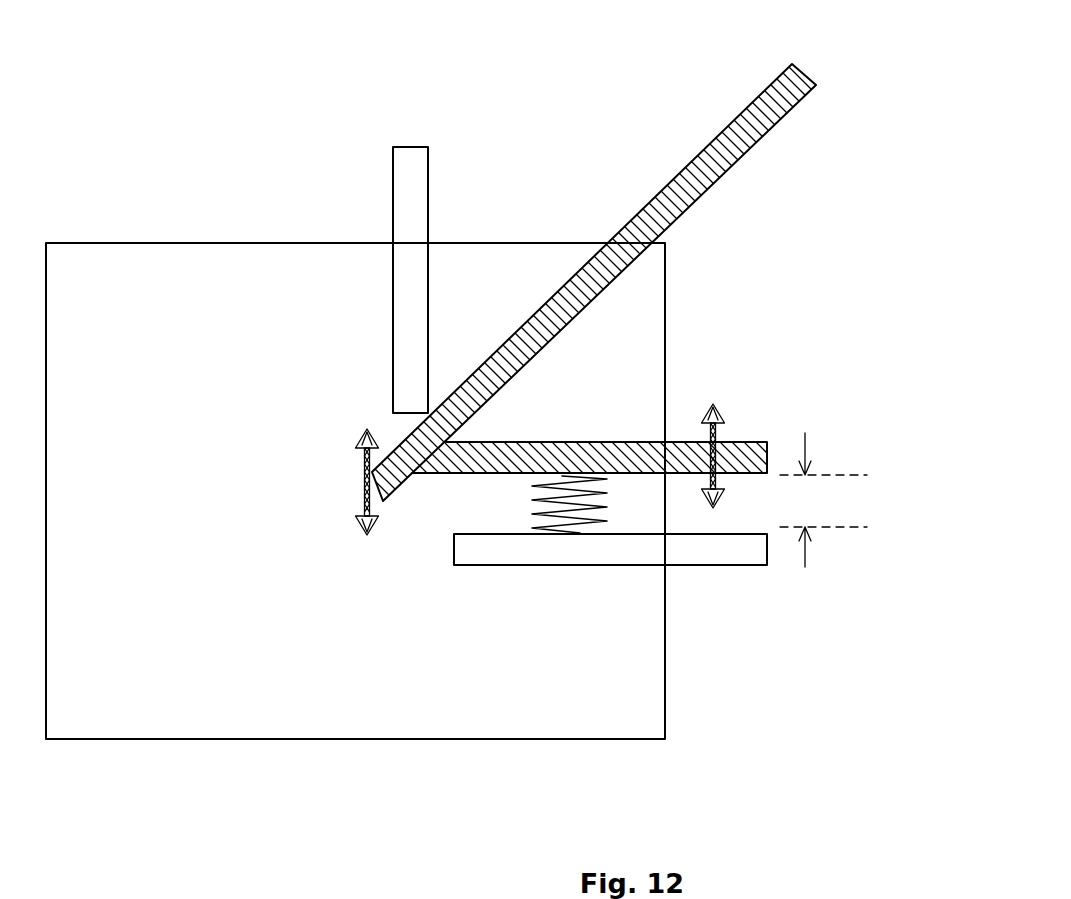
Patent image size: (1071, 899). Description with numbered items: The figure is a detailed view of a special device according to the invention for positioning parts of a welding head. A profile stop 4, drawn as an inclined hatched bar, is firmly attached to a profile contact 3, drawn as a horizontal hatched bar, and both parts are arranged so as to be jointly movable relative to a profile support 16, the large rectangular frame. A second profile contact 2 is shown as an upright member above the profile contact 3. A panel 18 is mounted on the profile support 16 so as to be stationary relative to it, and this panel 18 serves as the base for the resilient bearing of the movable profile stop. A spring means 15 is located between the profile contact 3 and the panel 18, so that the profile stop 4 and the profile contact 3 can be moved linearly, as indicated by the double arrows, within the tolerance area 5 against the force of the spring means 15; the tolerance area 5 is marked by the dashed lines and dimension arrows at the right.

The profile support 16 is at (223, 273).
The first profile contact 2 is at (417, 177).
The profile stop 4 is at (713, 138).
The second profile contact 3 is at (752, 447).
The spring means 15 is at (560, 495).
The panel 18 is at (494, 548).
The tolerance area 5 is at (783, 509).